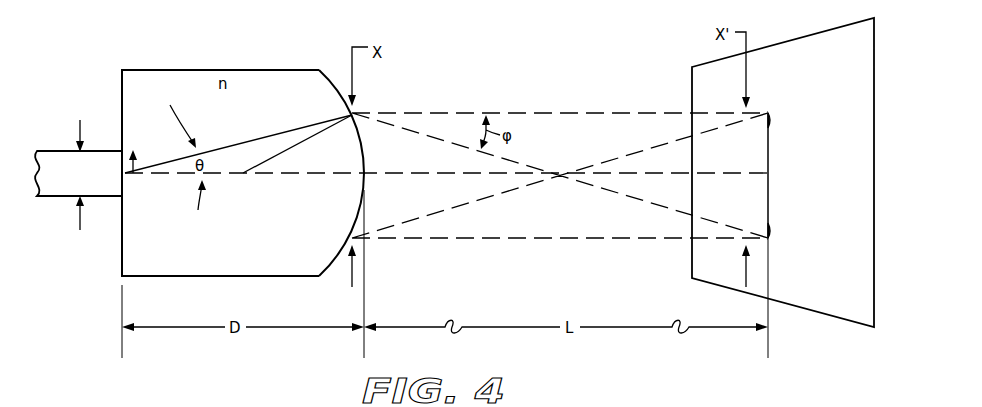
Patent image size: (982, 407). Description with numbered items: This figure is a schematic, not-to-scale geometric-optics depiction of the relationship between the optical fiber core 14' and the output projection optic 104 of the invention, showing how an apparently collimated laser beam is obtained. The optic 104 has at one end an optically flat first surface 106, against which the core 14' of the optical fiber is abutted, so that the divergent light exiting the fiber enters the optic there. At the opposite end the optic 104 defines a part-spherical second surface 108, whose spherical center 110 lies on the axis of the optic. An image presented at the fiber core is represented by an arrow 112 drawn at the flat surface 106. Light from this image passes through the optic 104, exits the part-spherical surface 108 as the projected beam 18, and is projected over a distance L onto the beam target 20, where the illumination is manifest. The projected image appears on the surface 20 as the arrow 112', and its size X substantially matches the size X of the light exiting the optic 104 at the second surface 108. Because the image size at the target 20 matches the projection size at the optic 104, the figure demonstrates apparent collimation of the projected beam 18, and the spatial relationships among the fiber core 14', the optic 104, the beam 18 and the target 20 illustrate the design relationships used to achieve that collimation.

The projection optic 104 is at (171, 277).
The optically flat first surface 106 is at (117, 74).
The part-spherical second surface 108 is at (340, 86).
The optical fiber core 14' is at (78, 165).
The arrow 112 is at (151, 192).
The spherical center 110 is at (243, 176).
The projected beam 18 is at (563, 110).
The projected image arrow 112' is at (798, 175).
The beam target 20 is at (836, 296).